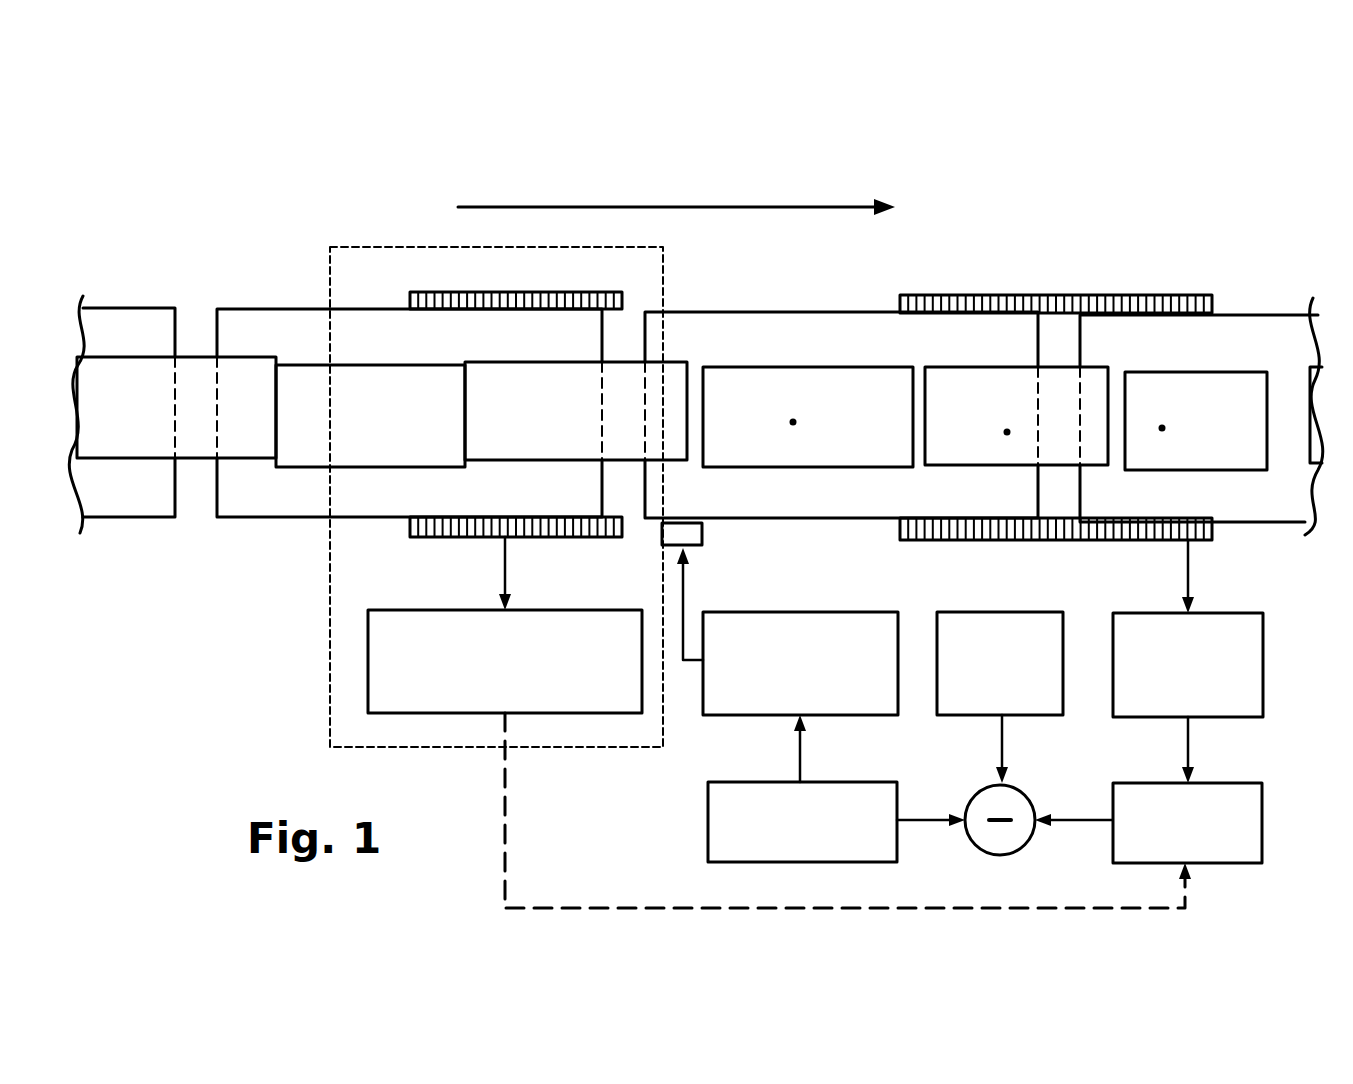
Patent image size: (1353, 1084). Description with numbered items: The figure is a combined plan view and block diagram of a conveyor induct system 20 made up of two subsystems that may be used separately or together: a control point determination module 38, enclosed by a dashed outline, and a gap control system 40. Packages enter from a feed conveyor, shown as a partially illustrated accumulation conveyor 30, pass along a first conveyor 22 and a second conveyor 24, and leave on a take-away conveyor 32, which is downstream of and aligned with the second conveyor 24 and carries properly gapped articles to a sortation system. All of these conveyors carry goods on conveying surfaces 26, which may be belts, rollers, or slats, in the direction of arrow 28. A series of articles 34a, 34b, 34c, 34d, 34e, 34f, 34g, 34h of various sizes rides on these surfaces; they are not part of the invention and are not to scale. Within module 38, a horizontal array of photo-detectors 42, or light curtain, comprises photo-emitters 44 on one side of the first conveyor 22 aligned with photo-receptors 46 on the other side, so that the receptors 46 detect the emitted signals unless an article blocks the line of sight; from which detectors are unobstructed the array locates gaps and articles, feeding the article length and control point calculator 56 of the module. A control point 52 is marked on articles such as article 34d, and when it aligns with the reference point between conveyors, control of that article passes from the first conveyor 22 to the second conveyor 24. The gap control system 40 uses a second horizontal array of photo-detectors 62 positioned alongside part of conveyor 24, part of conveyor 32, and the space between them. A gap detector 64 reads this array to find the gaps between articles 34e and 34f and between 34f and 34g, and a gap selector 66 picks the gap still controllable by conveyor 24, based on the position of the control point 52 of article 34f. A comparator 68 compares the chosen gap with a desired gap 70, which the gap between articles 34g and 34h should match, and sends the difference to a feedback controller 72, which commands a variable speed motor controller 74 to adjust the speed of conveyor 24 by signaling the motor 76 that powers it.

The conveyor induct system 20 is at (222, 148).
The first conveyor 22 is at (297, 305).
The second conveyor 24 is at (760, 305).
The conveying surfaces 26 is at (116, 351).
The arrow 28 is at (657, 207).
The accumulation conveyor 30 is at (118, 298).
The take-away conveyor 32 is at (1272, 305).
The article 34a is at (68, 372).
The article 34b is at (190, 357).
The article 34c is at (352, 366).
The article 34d is at (500, 363).
The article 34e is at (775, 367).
The article 34f is at (950, 367).
The article 34g is at (1202, 371).
The article 34h is at (1320, 452).
The control point determination module 38 is at (410, 247).
The gap control system 40 is at (1054, 780).
The horizontal array of photo-detectors 42 is at (626, 544).
The photo-emitters 44 is at (470, 540).
The photo-receptors 46 is at (458, 297).
The control point 52 is at (793, 422).
The article length and control point calculator 56 is at (540, 610).
The horizontal array of photo-detectors 62 is at (1226, 535).
The gap detector 64 is at (1263, 650).
The gap selector 66 is at (1263, 808).
The comparator 68 is at (1000, 856).
The desired gap 70 is at (985, 612).
The feedback controller 72 is at (708, 816).
The variable speed motor controller 74 is at (783, 612).
The motor 76 is at (703, 534).